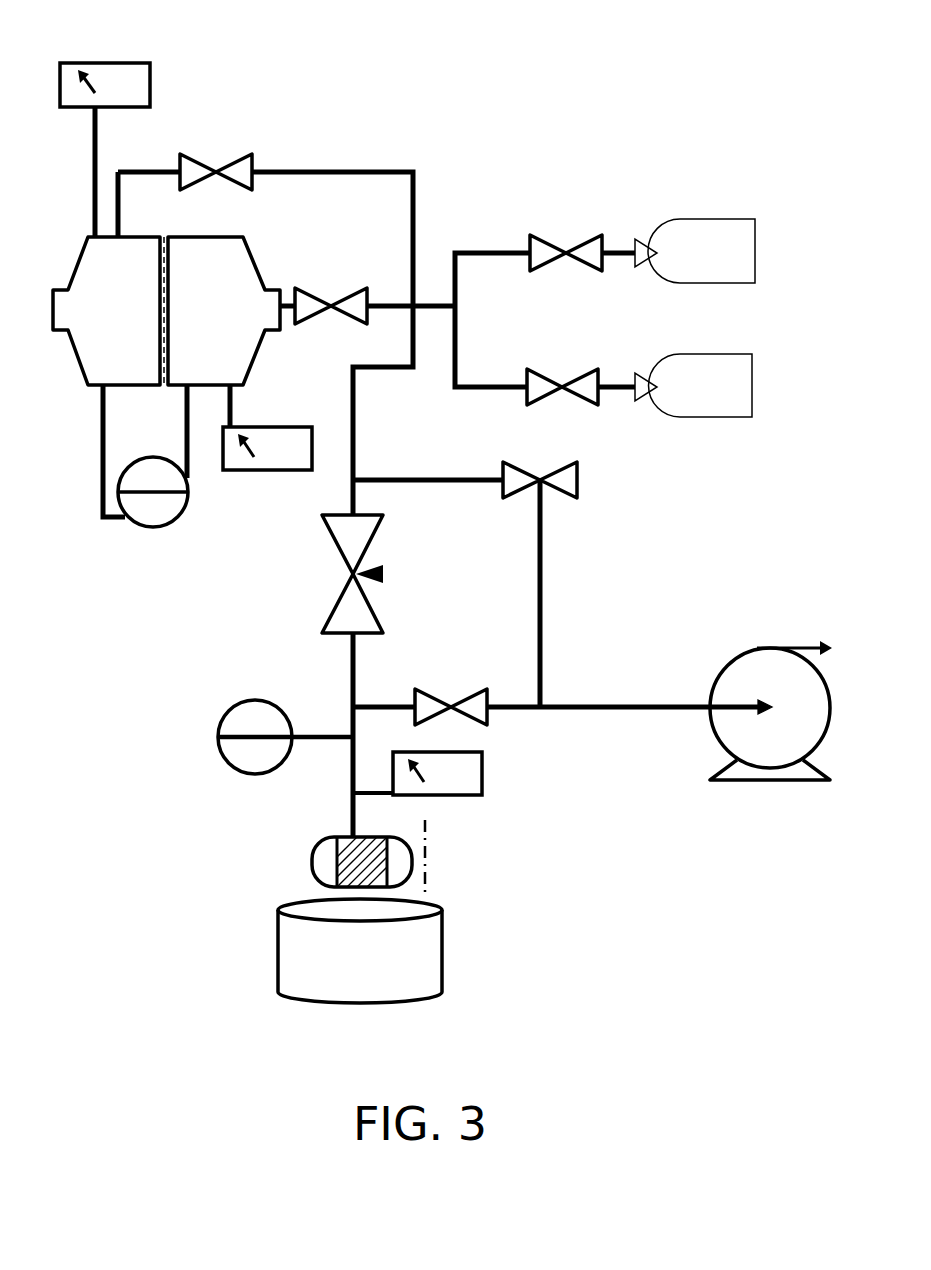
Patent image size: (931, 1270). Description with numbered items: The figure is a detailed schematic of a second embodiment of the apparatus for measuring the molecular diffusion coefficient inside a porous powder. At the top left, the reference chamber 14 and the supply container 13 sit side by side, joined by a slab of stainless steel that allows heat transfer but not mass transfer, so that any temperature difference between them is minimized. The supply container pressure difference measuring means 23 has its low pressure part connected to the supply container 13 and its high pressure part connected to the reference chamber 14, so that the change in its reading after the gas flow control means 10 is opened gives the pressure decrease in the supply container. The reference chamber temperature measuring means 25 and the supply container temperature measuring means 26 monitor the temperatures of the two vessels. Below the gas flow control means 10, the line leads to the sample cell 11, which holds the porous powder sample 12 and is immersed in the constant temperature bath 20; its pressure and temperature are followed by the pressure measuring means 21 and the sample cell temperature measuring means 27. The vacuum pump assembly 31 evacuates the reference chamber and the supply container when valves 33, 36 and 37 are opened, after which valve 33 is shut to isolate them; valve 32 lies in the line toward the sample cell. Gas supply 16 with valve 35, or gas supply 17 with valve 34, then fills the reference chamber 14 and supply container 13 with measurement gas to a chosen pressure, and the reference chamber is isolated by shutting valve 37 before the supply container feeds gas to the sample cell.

The gas flow control means 10 is at (351, 574).
The sample cell 11 is at (310, 860).
The porous powder sample 12 is at (360, 862).
The supply container 13 is at (226, 317).
The reference chamber 14 is at (123, 317).
The gas supply 16 is at (690, 274).
The gas supply 17 is at (687, 407).
The constant temperature bath 20 is at (443, 960).
The pressure measuring means 21 is at (218, 732).
The supply container pressure difference measuring means 23 is at (148, 530).
The reference chamber temperature measuring means 25 is at (150, 63).
The supply container temperature measuring means 26 is at (265, 472).
The sample cell temperature measuring means 27 is at (453, 797).
The vacuum pump assembly 31 is at (728, 780).
The valve 32 is at (455, 707).
The valve 33 is at (575, 493).
The valve 34 is at (598, 390).
The valve 35 is at (566, 253).
The valve 36 is at (331, 306).
The valve 37 is at (218, 172).